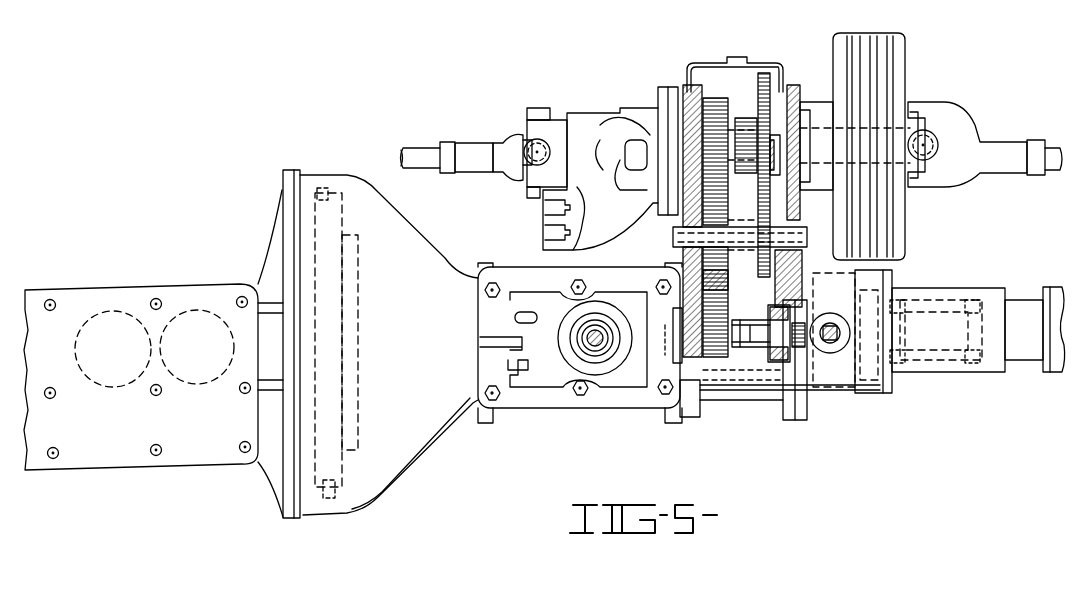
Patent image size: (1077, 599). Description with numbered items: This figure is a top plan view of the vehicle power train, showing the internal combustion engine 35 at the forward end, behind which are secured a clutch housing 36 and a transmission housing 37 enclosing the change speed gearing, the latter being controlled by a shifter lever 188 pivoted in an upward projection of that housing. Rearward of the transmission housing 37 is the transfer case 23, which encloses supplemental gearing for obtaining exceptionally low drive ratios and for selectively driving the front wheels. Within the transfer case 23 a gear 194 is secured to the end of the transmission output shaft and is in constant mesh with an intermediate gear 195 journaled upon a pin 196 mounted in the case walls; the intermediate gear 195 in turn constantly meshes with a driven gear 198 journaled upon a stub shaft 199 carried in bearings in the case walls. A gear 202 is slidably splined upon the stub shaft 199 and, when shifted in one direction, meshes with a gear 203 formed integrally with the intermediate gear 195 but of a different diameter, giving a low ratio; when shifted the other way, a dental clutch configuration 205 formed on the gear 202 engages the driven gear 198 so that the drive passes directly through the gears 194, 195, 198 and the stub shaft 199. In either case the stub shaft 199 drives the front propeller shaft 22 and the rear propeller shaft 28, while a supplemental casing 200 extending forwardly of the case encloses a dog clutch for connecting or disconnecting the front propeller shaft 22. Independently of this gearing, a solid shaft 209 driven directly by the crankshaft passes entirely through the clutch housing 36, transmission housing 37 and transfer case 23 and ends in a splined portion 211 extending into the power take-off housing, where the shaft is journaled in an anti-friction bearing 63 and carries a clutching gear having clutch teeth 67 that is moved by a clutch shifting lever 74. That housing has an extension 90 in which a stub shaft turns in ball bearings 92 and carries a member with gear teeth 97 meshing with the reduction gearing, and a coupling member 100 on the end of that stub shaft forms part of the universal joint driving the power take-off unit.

The front propeller shaft 22 is at (430, 130).
The transfer case 23 is at (695, 56).
The rear propeller shaft 28 is at (987, 140).
The internal combustion engine 35 is at (118, 469).
The clutch housing 36 is at (385, 493).
The transmission housing 37 is at (580, 354).
The anti-friction bearing 63 is at (780, 357).
The clutch teeth 67 is at (834, 330).
The clutch shifting lever 74 is at (830, 340).
The extension 90 is at (948, 370).
The ball bearings 92 is at (970, 303).
The gear teeth 97 is at (873, 287).
The coupling member 100 is at (1033, 357).
The shifter lever 188 is at (593, 345).
The gear 194 is at (720, 357).
The intermediate gear 195 is at (723, 273).
The pin 196 is at (697, 248).
The driven gear 198 is at (711, 97).
The stub shaft 199 is at (683, 133).
The supplemental casing 200 is at (607, 100).
The gear 202 is at (767, 72).
The gear 203 is at (798, 270).
The dental clutch configuration 205 is at (737, 127).
The solid shaft 209 is at (667, 340).
The splined portion 211 is at (800, 337).